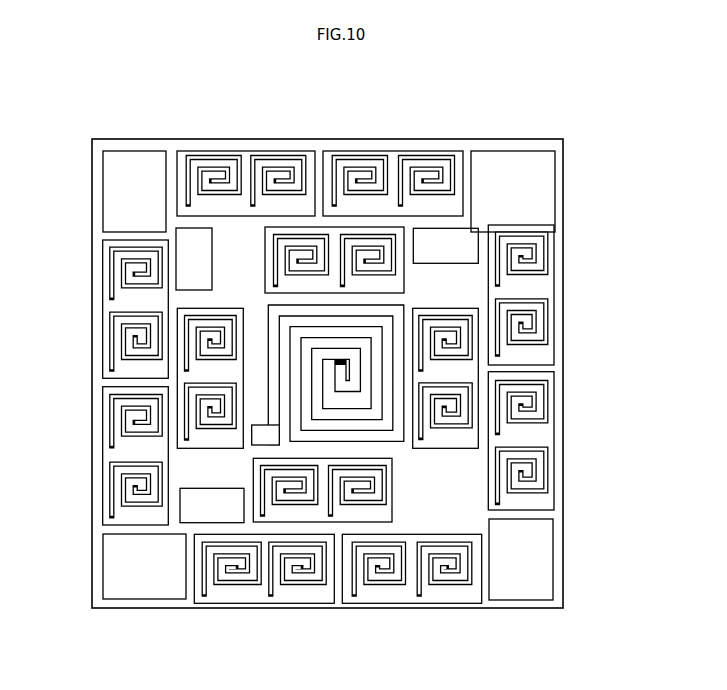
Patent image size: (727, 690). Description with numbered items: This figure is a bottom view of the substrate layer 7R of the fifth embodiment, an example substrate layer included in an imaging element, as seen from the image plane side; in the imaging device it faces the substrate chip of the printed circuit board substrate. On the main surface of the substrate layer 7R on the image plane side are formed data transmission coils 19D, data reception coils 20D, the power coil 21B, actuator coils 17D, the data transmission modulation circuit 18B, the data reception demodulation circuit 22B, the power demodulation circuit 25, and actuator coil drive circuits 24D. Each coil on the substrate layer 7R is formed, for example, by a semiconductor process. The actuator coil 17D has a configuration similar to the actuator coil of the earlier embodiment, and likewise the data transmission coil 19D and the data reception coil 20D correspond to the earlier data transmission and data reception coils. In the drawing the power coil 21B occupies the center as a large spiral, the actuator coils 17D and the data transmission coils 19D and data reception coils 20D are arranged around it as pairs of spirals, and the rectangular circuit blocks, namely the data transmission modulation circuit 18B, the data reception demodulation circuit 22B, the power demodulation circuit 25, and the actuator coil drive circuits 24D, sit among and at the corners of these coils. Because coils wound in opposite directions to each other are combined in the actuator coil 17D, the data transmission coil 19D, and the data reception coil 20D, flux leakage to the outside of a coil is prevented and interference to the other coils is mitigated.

The actuator coil drive circuit 24D is at (138, 167).
The actuator coil 17D is at (208, 165).
The data reception coil 20D is at (318, 233).
The substrate layer 7R is at (392, 155).
The data reception demodulation circuit 22B is at (185, 240).
The power demodulation circuit 25 is at (465, 252).
The data transmission coil 19D is at (189, 311).
The data transmission modulation circuit 18B is at (197, 512).
The power coil 21B is at (309, 432).